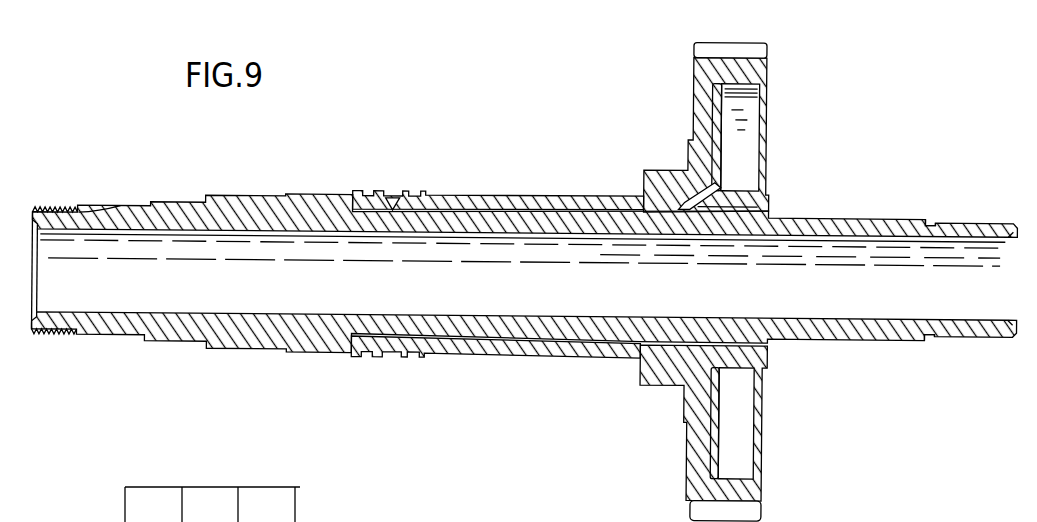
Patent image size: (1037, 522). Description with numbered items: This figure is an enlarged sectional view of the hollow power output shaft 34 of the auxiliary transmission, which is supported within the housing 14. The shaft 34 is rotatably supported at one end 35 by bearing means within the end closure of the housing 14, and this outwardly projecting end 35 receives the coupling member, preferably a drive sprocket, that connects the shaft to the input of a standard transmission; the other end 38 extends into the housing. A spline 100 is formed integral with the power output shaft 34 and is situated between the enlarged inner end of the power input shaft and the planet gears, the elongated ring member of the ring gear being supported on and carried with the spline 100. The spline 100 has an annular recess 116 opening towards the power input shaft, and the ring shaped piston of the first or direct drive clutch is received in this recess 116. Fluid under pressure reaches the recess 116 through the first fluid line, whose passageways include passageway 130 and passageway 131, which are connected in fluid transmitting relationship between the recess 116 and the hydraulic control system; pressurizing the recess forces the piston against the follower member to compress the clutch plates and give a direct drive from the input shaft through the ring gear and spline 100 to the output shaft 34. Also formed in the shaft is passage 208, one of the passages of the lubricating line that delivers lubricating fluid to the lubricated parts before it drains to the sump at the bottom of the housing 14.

The power output shaft 34 is at (258, 205).
The one end of power output shaft 35 is at (124, 208).
The passageway 130 is at (452, 212).
The passage 208 is at (493, 338).
The spline 100 is at (758, 68).
The annular recess 116 is at (750, 166).
The passageway 131 is at (693, 214).
The other end of power output shaft 38 is at (940, 232).
The housing 14 is at (196, 500).